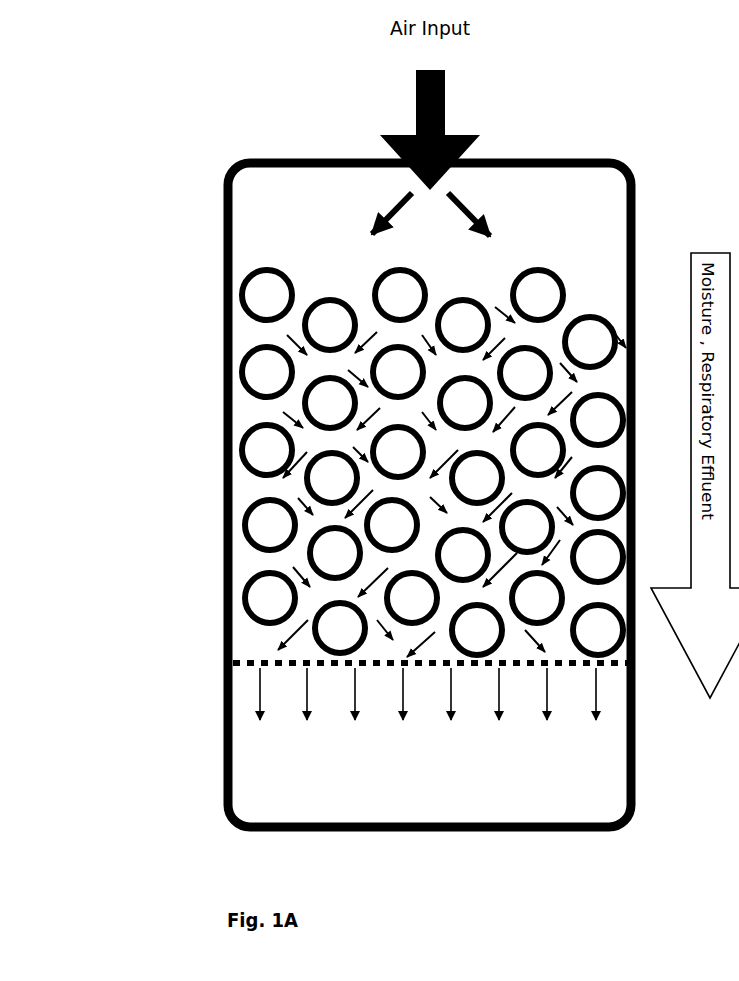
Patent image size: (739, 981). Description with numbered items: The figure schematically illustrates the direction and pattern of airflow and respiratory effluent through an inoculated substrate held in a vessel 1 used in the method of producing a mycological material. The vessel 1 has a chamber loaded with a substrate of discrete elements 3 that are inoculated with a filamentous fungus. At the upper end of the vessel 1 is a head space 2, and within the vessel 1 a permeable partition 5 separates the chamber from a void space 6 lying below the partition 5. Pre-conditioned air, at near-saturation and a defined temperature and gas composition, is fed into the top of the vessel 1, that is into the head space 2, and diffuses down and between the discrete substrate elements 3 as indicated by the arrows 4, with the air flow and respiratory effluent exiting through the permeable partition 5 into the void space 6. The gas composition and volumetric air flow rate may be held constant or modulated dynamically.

The vessel 1 is at (230, 163).
The head space 2 is at (565, 205).
The discrete substrate elements 3 is at (263, 292).
The arrows 4 is at (322, 440).
The permeable partition 5 is at (273, 662).
The void space 6 is at (387, 767).